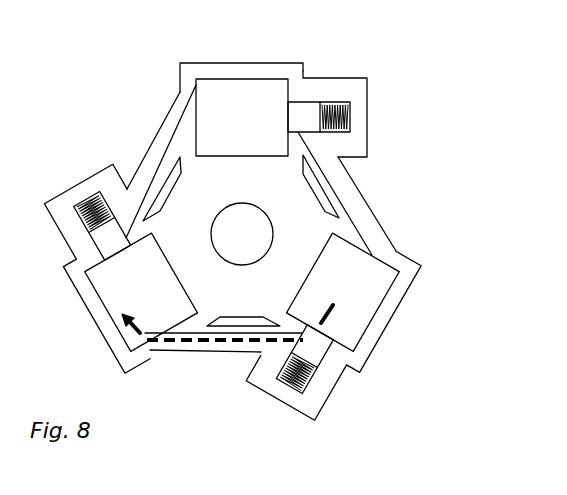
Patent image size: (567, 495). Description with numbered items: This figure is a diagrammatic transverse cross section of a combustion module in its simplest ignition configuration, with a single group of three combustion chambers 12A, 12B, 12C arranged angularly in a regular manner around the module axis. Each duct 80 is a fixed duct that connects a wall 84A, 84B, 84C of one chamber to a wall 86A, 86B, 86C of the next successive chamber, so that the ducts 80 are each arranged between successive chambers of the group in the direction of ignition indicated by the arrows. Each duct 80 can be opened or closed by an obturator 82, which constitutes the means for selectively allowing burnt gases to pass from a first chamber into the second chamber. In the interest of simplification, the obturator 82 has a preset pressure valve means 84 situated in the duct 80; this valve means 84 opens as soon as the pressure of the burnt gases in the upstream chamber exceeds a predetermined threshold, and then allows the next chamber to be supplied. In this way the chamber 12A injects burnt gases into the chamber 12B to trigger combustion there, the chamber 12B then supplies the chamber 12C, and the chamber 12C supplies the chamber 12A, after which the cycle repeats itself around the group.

The first combustion chamber 12A is at (195, 81).
The second combustion chamber 12B is at (360, 329).
The third combustion chamber 12C is at (101, 283).
The duct 80 is at (170, 145).
The obturator 82 is at (337, 92).
The preset pressure valve means 84 is at (297, 133).
The wall 84A is at (305, 68).
The wall 84B is at (318, 383).
The wall 84C is at (68, 265).
The wall 86A is at (180, 63).
The wall 86B is at (402, 262).
The wall 86C is at (130, 372).